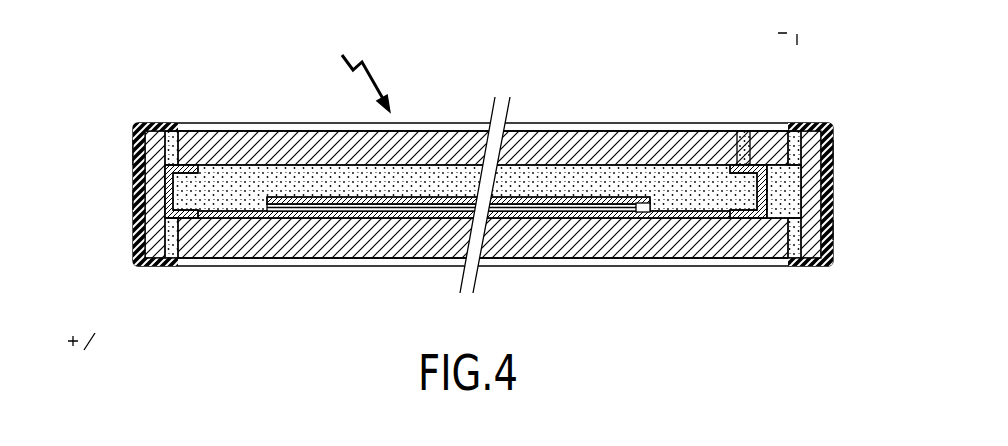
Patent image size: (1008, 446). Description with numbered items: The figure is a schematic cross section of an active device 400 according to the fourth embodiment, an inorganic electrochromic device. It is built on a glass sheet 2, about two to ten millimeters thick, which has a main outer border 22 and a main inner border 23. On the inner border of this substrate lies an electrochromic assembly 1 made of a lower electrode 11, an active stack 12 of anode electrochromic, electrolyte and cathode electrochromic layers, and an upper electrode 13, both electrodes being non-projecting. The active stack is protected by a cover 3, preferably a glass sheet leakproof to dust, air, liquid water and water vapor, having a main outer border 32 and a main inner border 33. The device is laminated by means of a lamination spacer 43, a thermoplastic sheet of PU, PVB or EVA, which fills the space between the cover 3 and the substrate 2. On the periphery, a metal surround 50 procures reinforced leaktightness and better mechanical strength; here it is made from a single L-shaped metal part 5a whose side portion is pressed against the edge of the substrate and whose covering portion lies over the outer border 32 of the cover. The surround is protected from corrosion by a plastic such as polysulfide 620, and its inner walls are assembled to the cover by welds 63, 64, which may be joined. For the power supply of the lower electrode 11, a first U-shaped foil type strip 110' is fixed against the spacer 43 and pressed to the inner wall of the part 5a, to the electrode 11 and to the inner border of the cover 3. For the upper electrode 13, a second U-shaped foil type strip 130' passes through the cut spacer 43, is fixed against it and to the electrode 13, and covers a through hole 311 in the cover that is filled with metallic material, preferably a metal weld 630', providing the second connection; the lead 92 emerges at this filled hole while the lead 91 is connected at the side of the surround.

The active device 400 is at (356, 70).
The metal surround 50 is at (149, 127).
The weld 64 is at (172, 135).
The lamination spacer 43 is at (297, 170).
The protective cover 3 is at (432, 138).
The main outer border of the cover 32 is at (540, 129).
The main inner border of the cover 33 is at (596, 170).
The through hole 311 is at (720, 138).
The lead 92 is at (741, 131).
The metal weld 630' is at (796, 146).
The part of the surround 5a is at (135, 162).
The polysulfide 620 is at (135, 202).
The weld 63 is at (170, 266).
The first U-shaped foil type strip 110' is at (200, 237).
The lower electrode 11 is at (322, 218).
The active stack 12 is at (364, 211).
The upper electrode 13 is at (412, 204).
The electro-optic element 1 is at (415, 306).
The glass sheet 2 is at (527, 247).
The main outer border of the substrate 22 is at (590, 263).
The main inner border of the substrate 23 is at (643, 213).
The second U-shaped foil type strip 130' is at (752, 237).
The lead wire 91 is at (135, 228).